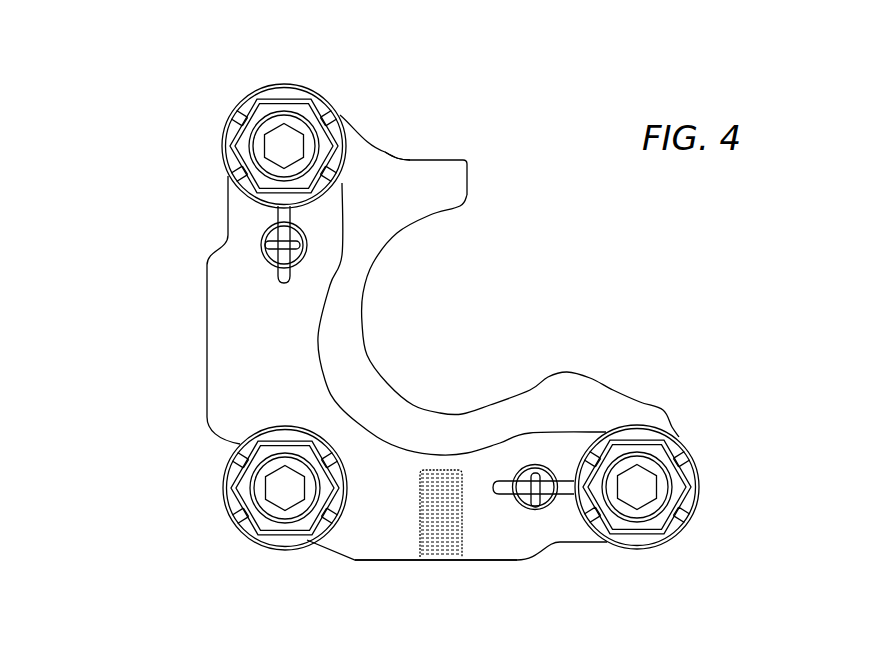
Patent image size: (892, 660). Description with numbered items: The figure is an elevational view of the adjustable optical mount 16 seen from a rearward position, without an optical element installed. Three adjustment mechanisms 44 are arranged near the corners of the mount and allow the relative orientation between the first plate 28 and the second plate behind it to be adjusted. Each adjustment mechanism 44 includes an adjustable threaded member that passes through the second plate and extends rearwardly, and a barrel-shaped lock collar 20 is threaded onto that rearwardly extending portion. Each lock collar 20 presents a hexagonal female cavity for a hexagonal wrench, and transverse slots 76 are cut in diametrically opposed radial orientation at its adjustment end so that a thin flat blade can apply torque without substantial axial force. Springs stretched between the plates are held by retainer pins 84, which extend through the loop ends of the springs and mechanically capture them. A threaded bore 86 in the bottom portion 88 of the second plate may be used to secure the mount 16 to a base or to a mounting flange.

The adjustable optical mount 16 is at (178, 338).
The lock collar 20 is at (282, 85).
The first plate 28 is at (382, 150).
The adjustment mechanism 44 is at (216, 105).
The transverse slots 76 is at (235, 173).
The retainer pins 84 is at (288, 264).
The threaded bore 86 is at (461, 523).
The bottom portion 88 is at (490, 562).